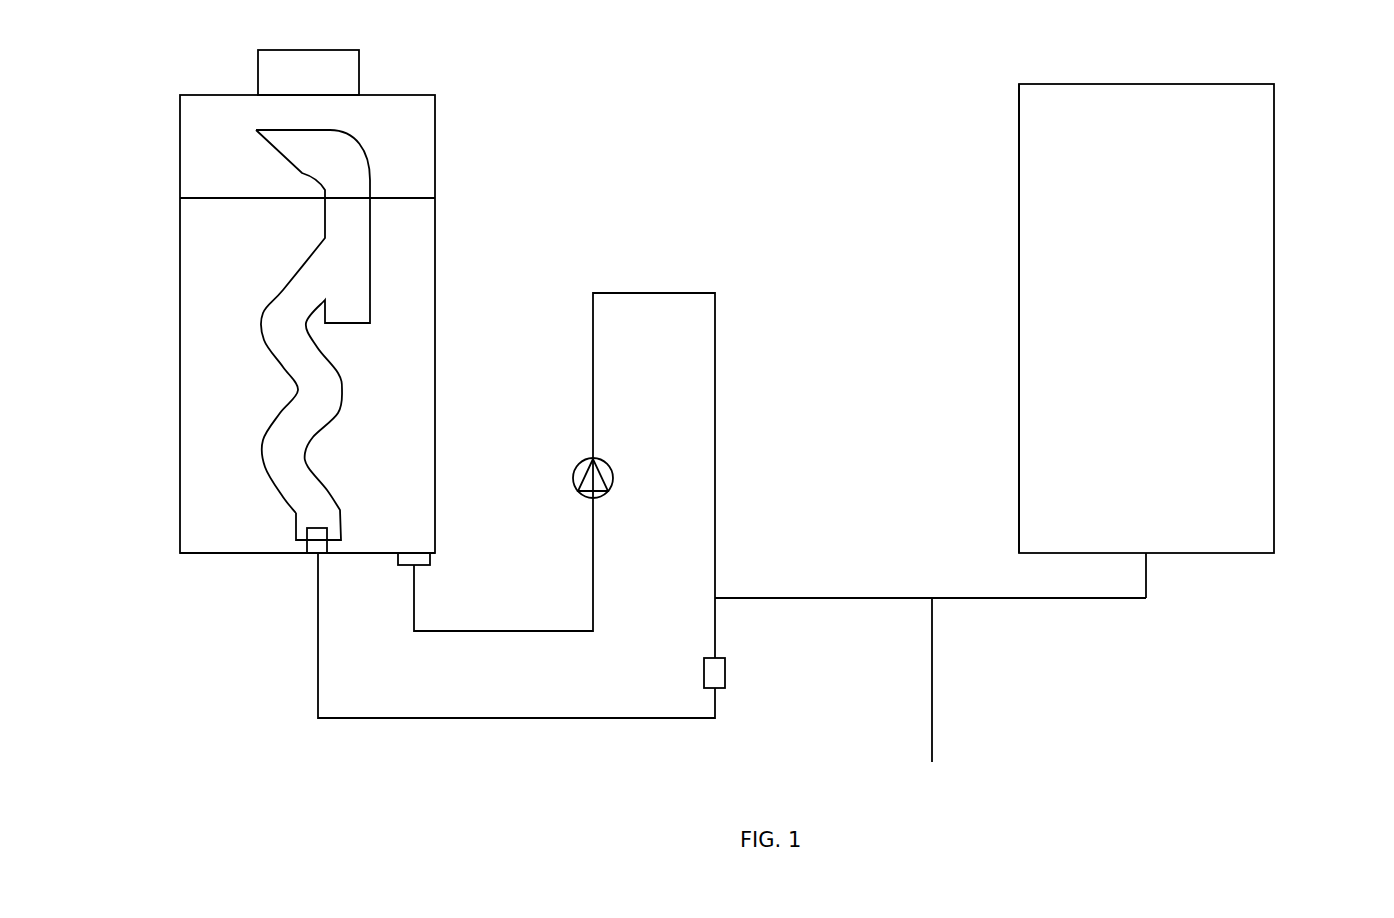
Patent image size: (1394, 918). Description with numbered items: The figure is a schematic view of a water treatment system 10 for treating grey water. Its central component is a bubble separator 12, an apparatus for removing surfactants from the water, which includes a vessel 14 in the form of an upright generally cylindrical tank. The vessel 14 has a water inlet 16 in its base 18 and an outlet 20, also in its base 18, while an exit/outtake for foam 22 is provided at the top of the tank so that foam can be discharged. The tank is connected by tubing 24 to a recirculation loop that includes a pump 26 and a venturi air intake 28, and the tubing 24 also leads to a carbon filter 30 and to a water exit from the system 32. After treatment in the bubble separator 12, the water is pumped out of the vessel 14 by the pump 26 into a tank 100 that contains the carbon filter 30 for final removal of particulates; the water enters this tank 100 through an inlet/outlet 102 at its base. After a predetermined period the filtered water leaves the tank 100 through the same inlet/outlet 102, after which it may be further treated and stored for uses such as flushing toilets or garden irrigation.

The water treatment system 10 is at (780, 71).
The bubble separator 12 is at (388, 335).
The vessel 14 is at (177, 317).
The water inlet 16 is at (307, 545).
The base 18 is at (199, 556).
The outlet 20 is at (430, 557).
The exit/outtake for foam 22 is at (350, 67).
The tubing 24 is at (593, 562).
The pump 26 is at (575, 478).
The venturi air intake 28 is at (726, 673).
The carbon filter 30 is at (1042, 366).
The water exit from the system 32 is at (935, 727).
The tank 100 is at (1275, 325).
The inlet/outlet 102 is at (1150, 556).